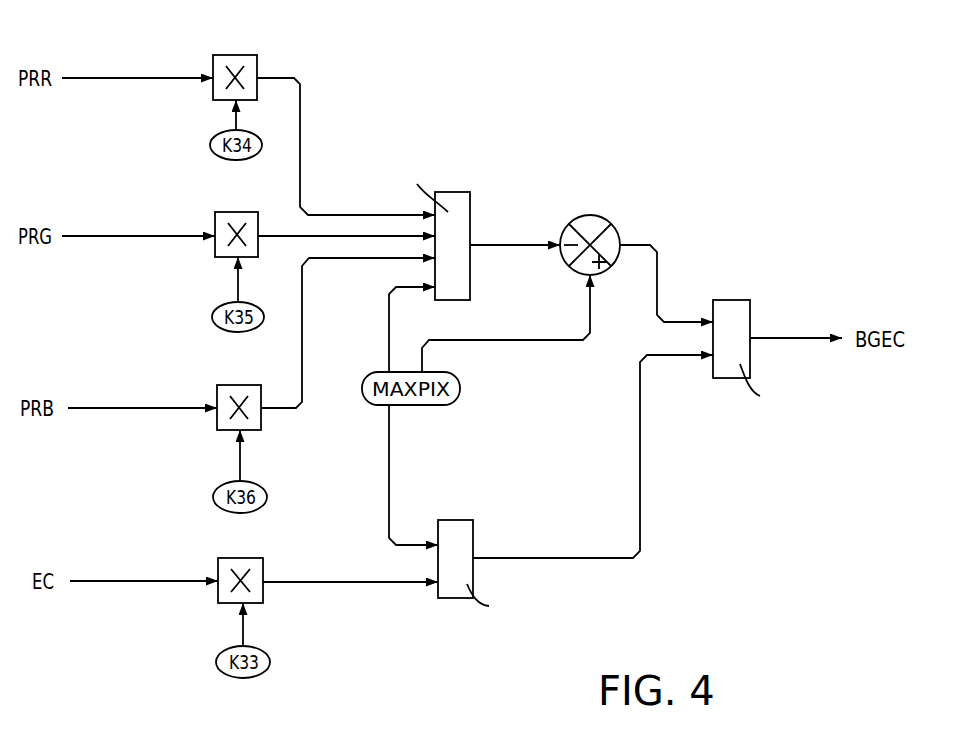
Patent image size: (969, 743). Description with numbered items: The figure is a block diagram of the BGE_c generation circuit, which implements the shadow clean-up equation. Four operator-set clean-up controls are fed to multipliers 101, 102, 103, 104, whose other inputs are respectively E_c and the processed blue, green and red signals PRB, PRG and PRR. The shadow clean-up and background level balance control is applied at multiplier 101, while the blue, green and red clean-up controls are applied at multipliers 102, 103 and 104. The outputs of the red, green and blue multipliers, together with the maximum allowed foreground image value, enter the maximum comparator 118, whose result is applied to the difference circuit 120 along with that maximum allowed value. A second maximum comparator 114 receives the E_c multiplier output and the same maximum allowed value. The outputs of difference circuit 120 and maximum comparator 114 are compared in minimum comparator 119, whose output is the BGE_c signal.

The multiplier 101 is at (263, 594).
The multiplier 102 is at (257, 430).
The multiplier 103 is at (220, 212).
The multiplier 104 is at (257, 63).
The maximum comparator 114 is at (473, 531).
The maximum comparator 118 is at (471, 196).
The minimum comparator 119 is at (750, 312).
The difference circuit 120 is at (608, 222).